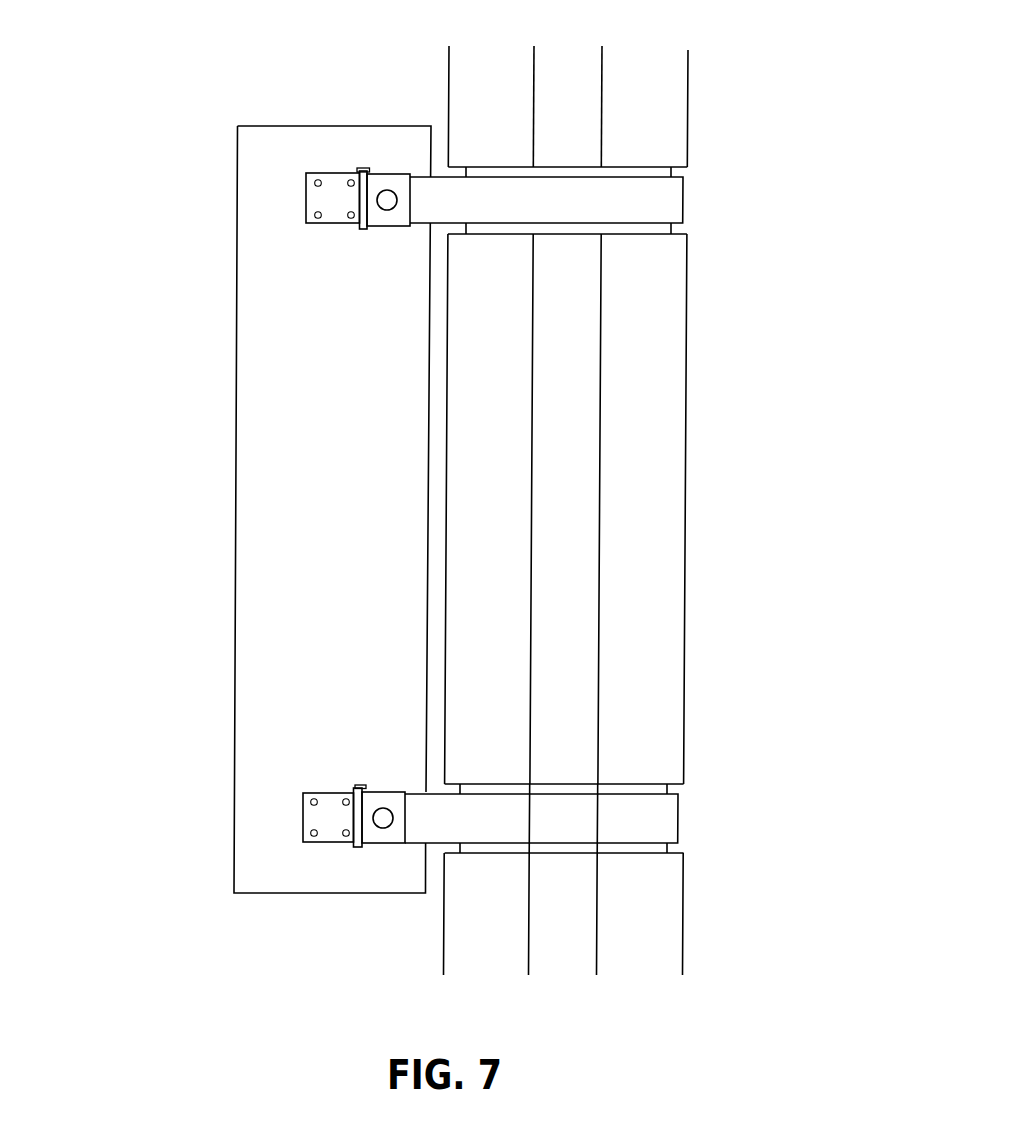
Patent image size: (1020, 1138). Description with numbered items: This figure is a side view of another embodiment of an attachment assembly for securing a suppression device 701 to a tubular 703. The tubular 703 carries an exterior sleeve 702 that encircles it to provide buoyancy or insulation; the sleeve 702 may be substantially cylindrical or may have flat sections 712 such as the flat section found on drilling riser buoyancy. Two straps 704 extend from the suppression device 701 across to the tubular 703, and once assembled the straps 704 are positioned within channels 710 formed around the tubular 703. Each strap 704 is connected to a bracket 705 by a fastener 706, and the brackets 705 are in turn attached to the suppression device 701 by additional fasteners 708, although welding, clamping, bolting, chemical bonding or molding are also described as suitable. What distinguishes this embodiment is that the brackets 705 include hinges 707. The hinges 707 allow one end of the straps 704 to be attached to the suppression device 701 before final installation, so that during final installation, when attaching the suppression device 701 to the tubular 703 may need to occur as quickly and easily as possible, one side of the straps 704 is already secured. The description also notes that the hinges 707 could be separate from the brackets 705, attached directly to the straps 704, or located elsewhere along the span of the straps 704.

The suppression device 701 is at (277, 423).
The exterior sleeve 702 is at (651, 510).
The tubular 703 is at (675, 230).
The straps 704 is at (687, 193).
The brackets 705 is at (378, 172).
The fasteners 706 is at (392, 183).
The hinges 707 is at (353, 168).
The additional fasteners 708 is at (308, 212).
The channels 710 is at (693, 173).
The flat sections 712 is at (573, 626).